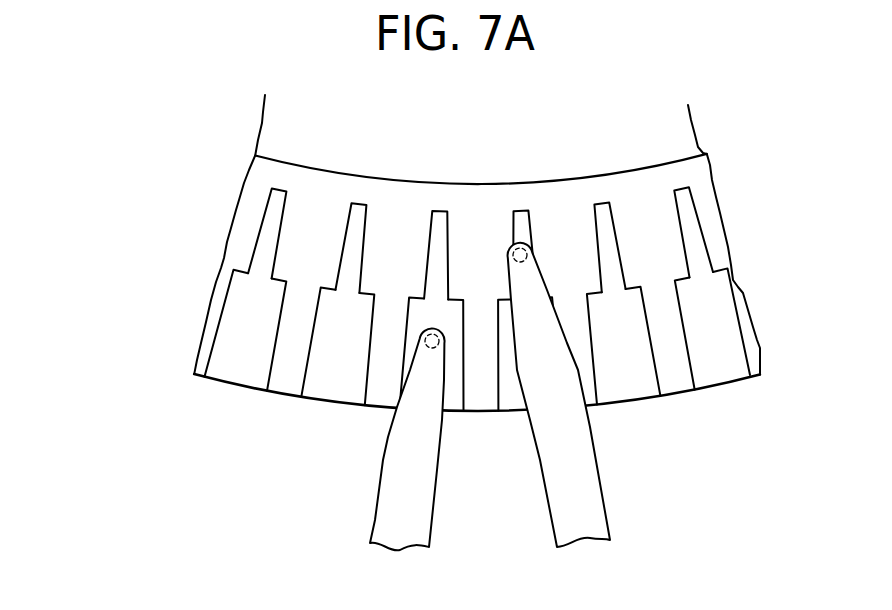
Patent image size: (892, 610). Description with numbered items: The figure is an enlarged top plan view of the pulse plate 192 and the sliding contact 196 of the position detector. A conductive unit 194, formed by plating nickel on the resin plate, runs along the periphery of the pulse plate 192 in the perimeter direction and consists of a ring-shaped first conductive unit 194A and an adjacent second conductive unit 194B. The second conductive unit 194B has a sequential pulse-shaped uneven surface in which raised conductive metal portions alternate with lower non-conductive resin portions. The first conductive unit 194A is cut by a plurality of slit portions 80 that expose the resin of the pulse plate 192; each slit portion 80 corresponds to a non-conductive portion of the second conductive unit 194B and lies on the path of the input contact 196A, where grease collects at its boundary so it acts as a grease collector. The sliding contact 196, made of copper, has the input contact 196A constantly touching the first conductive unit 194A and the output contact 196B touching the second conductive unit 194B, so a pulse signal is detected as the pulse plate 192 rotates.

The slit portion 80 is at (438, 215).
The pulse plate 192 is at (726, 199).
The conductive unit 194 is at (416, 281).
The first conductive unit 194A is at (347, 226).
The second conductive unit 194B is at (210, 262).
The sliding contact 196 is at (490, 418).
The input contact 196A is at (545, 480).
The output contact 196B is at (435, 482).